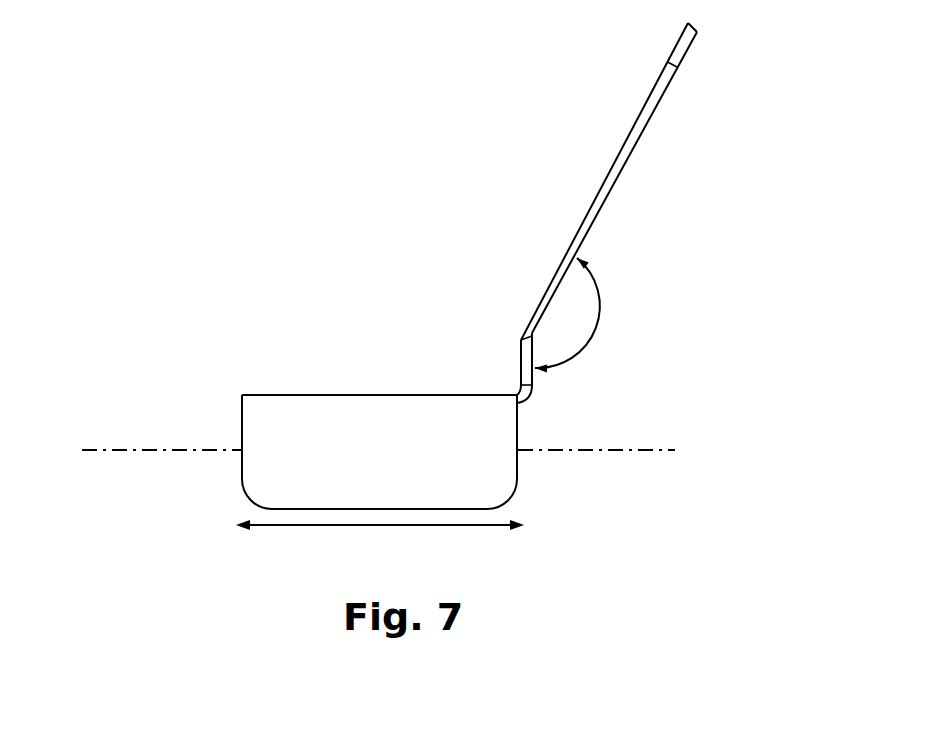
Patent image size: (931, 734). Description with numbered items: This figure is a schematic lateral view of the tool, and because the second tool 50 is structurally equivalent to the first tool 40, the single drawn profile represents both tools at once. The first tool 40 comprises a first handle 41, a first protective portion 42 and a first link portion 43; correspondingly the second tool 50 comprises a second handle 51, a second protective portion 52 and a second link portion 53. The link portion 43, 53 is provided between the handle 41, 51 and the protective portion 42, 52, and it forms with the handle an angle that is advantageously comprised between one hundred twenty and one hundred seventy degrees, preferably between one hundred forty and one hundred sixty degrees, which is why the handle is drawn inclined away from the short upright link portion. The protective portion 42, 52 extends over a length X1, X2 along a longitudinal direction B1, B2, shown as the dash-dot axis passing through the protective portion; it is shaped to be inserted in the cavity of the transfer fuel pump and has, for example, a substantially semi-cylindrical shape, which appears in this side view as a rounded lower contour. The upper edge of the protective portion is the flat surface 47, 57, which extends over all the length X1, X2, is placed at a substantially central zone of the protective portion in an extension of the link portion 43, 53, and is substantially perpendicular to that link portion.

The first tool 40 is at (440, 264).
The second tool 50 is at (258, 60).
The first handle 41 is at (672, 181).
The second handle 51 is at (640, 132).
The first protective portion 42 is at (287, 452).
The second protective portion 52 is at (263, 482).
The first link portion 43 is at (427, 350).
The second link portion 53 is at (518, 350).
The first flat surface 47 is at (336, 339).
The second flat surface 57 is at (320, 400).
The first longitudinal direction B1 is at (429, 450).
The second longitudinal direction B2 is at (429, 450).
The first length X1 is at (380, 544).
The second length X2 is at (380, 544).